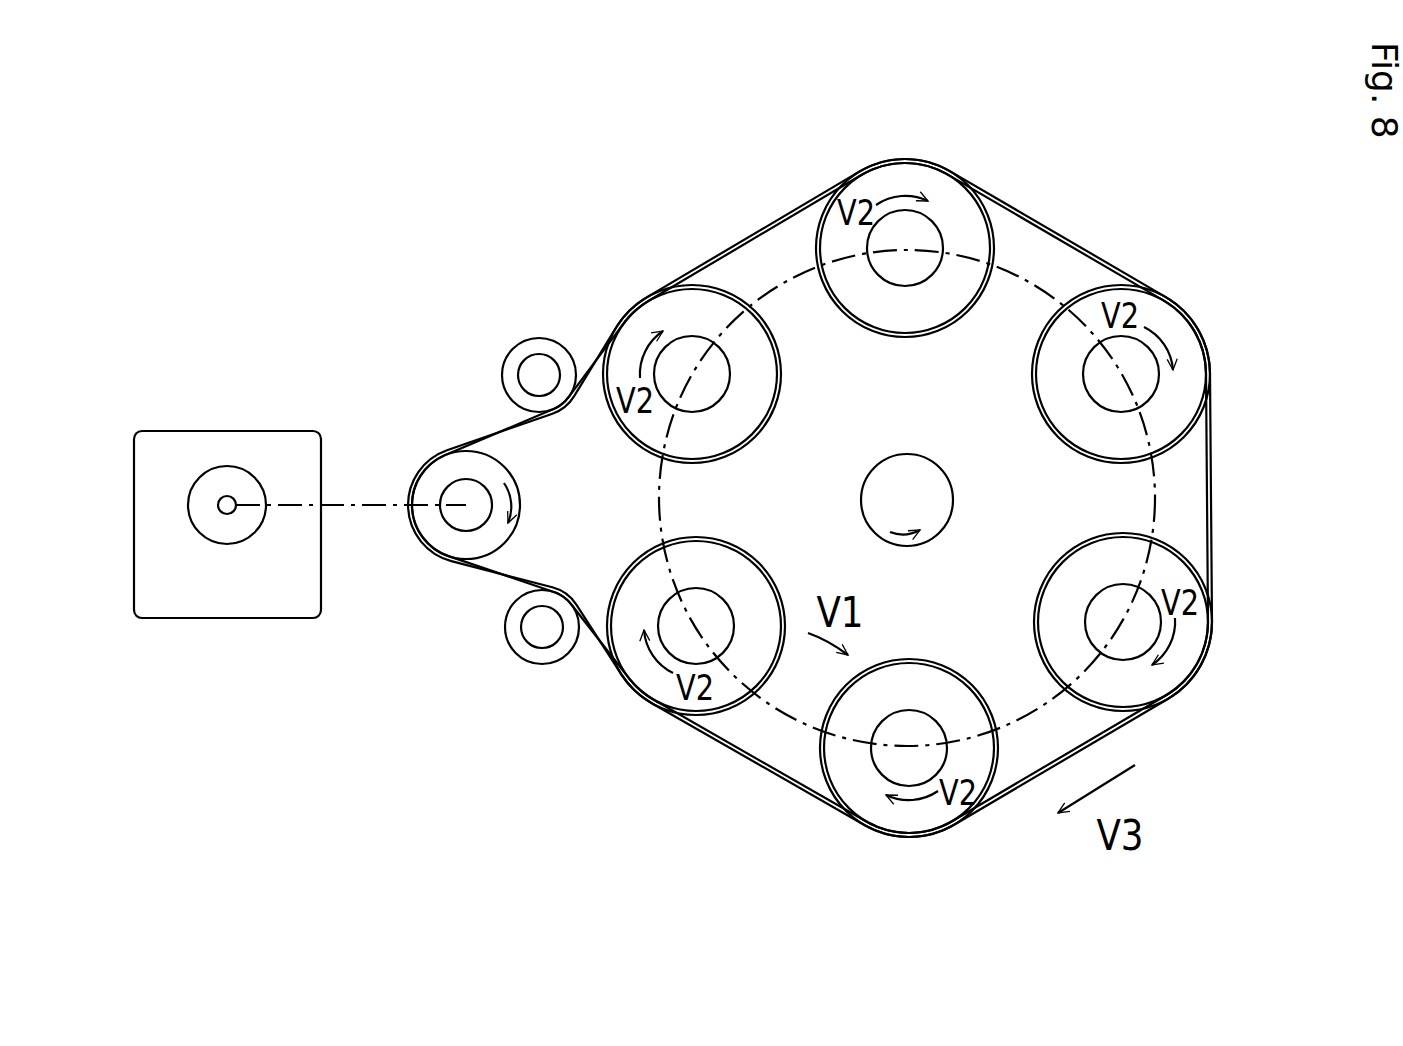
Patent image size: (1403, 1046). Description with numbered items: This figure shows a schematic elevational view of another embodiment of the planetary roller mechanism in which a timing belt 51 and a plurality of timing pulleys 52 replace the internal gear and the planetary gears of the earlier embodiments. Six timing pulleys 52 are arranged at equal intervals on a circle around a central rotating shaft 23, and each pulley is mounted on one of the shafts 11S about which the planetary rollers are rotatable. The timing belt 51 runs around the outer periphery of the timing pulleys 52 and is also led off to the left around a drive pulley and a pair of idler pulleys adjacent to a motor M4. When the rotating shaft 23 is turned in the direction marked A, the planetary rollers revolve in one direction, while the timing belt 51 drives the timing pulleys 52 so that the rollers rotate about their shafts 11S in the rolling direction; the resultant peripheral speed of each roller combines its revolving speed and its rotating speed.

The timing belt 51 is at (1080, 243).
The timing pulleys 52 is at (920, 178).
The shafts 11S is at (880, 238).
The rotating shaft 23 is at (921, 466).
The motor M4 is at (265, 438).